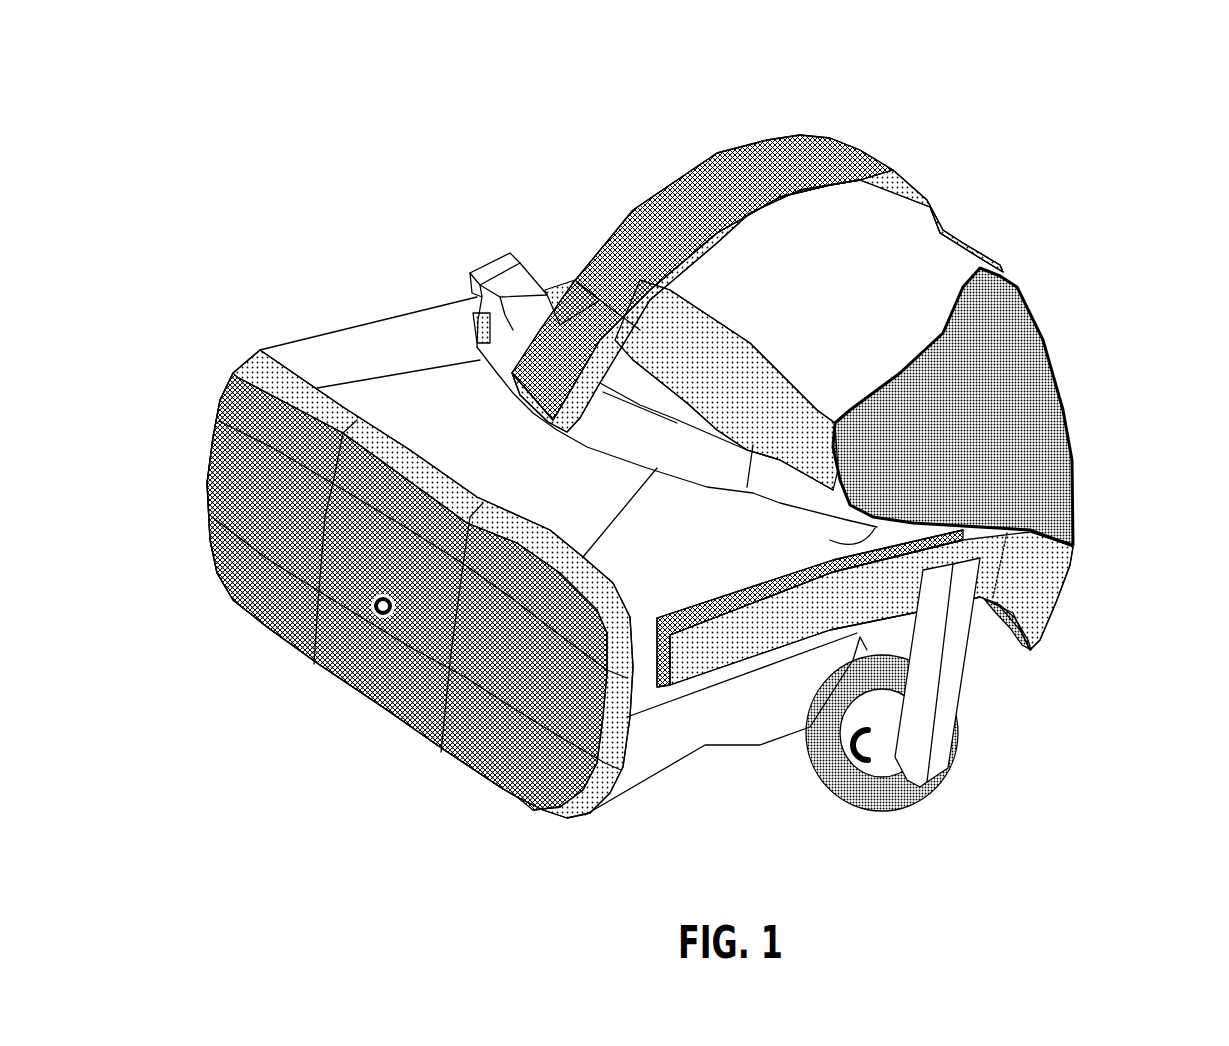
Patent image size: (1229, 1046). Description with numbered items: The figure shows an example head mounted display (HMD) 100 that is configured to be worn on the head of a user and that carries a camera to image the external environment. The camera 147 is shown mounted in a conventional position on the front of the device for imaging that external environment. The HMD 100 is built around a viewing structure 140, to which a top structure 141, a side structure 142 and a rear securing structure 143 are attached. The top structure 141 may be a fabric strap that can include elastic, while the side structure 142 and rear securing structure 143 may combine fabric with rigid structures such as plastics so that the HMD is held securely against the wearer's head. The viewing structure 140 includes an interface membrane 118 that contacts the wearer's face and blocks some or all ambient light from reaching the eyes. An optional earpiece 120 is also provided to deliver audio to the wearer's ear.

The head mounted display 100 is at (1198, 65).
The interface membrane 118 is at (542, 283).
The earpiece 120 is at (955, 780).
The viewing structure 140 is at (443, 353).
The top structure 141 is at (860, 148).
The side structure 142 is at (745, 338).
The rear securing structure 143 is at (1055, 357).
The camera 147 is at (366, 616).